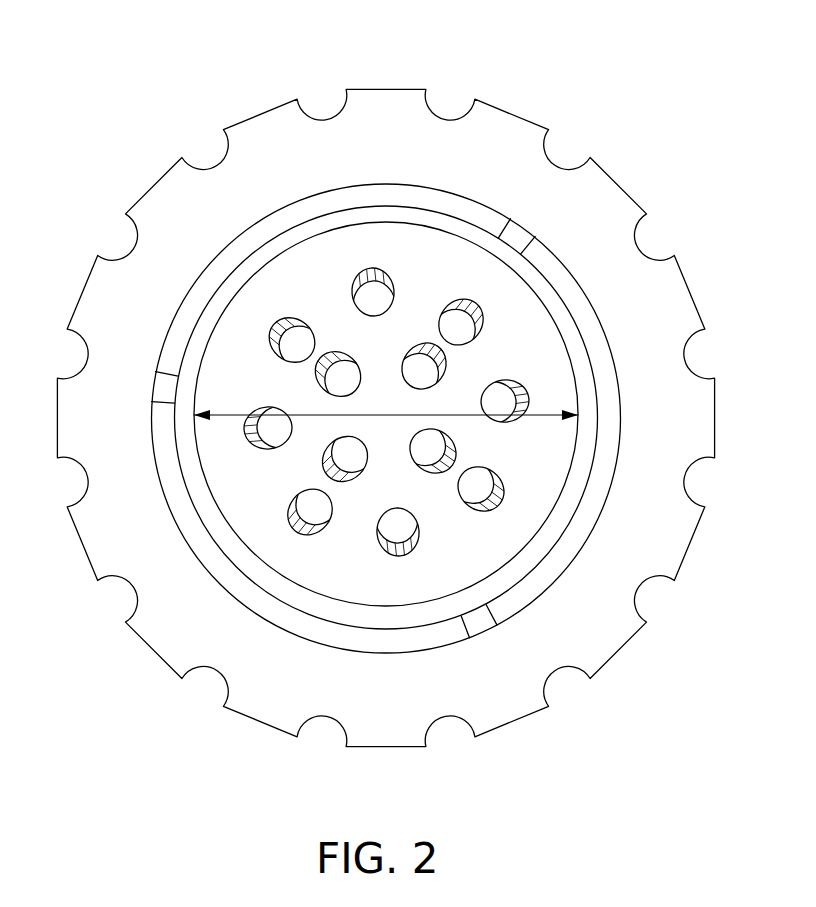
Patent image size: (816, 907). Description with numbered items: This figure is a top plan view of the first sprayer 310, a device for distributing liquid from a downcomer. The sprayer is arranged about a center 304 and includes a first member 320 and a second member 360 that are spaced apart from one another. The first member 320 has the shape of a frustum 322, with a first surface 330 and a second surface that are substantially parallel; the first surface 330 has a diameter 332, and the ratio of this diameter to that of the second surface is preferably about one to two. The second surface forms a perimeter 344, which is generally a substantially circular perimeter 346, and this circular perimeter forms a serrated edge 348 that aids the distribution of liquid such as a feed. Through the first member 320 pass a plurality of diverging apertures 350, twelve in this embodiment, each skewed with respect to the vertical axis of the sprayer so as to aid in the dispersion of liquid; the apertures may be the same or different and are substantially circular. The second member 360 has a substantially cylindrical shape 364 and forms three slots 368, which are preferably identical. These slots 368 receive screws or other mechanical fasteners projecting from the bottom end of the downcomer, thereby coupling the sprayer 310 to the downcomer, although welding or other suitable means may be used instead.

The first sprayer 310 is at (108, 62).
The center 304 is at (405, 412).
The first member 320 is at (172, 554).
The frustum 322 is at (668, 322).
The first surface 330 is at (395, 582).
The diameter 332 is at (244, 420).
The perimeter 344 is at (618, 672).
The substantially circular perimeter 346 is at (215, 717).
The serrated edge 348 is at (707, 475).
The aperture 350 is at (547, 462).
The second member 360 is at (535, 594).
The substantially cylindrical shape 364 is at (238, 228).
The slot 368 is at (527, 222).